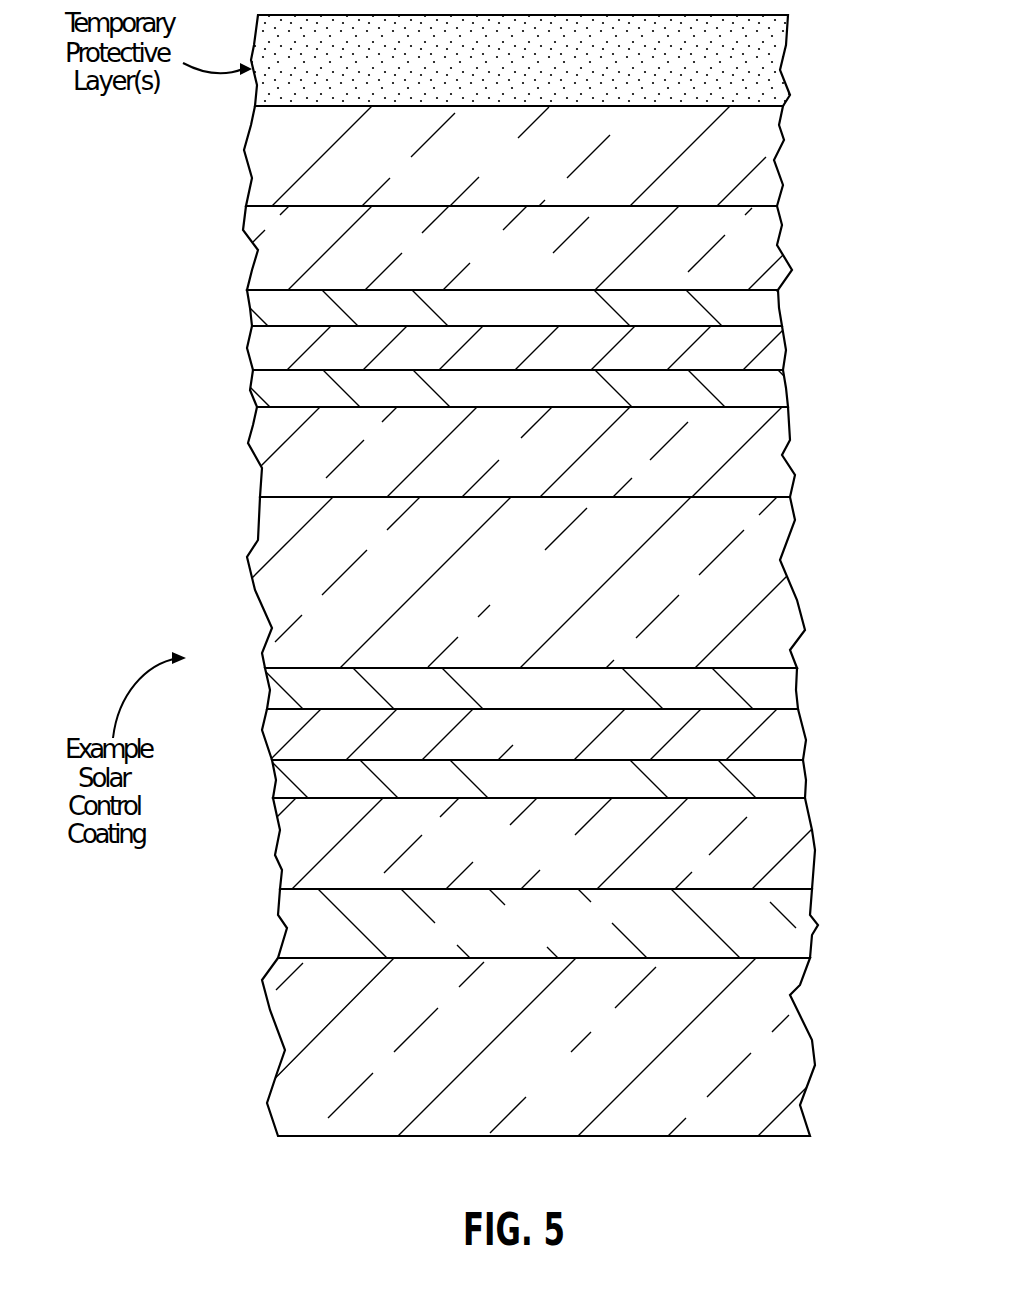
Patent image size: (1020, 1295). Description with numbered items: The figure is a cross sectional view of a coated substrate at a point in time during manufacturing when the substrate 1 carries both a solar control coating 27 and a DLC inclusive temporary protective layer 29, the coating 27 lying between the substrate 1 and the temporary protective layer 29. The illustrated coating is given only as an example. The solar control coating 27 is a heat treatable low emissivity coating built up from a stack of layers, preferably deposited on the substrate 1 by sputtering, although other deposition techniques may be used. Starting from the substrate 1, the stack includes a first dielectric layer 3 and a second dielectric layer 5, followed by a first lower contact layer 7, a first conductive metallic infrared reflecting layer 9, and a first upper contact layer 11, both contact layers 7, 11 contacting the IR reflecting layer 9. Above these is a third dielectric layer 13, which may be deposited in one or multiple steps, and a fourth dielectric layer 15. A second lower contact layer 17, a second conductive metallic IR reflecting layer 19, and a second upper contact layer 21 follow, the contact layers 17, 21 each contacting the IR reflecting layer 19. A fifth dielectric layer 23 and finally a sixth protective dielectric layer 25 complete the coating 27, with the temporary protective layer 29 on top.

The substrate 1 is at (773, 1055).
The first dielectric layer 3 is at (783, 935).
The second dielectric layer 5 is at (768, 852).
The first lower contact layer 7 is at (788, 777).
The first conductive metallic infrared reflecting layer 9 is at (778, 738).
The first upper contact layer 11 is at (778, 690).
The third dielectric layer 13 is at (745, 591).
The fourth dielectric layer 15 is at (773, 463).
The second lower contact layer 17 is at (740, 390).
The second conductive metallic infrared reflecting layer 19 is at (740, 352).
The second upper contact layer 21 is at (765, 310).
The fifth dielectric layer 23 is at (755, 237).
The sixth protective dielectric layer 25 is at (740, 160).
The solar control coating 27 is at (213, 107).
The temporary protective layer 29 is at (756, 66).